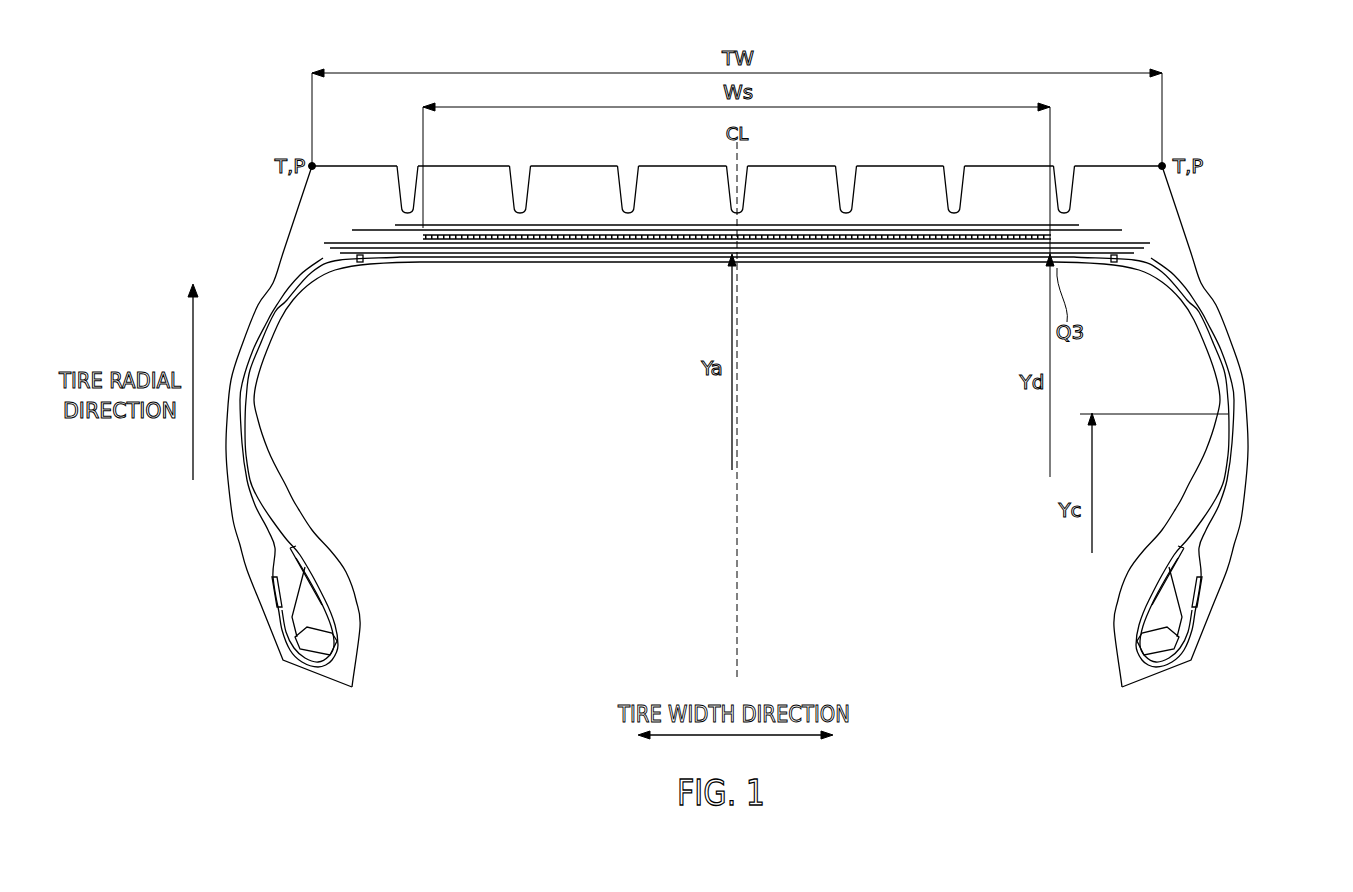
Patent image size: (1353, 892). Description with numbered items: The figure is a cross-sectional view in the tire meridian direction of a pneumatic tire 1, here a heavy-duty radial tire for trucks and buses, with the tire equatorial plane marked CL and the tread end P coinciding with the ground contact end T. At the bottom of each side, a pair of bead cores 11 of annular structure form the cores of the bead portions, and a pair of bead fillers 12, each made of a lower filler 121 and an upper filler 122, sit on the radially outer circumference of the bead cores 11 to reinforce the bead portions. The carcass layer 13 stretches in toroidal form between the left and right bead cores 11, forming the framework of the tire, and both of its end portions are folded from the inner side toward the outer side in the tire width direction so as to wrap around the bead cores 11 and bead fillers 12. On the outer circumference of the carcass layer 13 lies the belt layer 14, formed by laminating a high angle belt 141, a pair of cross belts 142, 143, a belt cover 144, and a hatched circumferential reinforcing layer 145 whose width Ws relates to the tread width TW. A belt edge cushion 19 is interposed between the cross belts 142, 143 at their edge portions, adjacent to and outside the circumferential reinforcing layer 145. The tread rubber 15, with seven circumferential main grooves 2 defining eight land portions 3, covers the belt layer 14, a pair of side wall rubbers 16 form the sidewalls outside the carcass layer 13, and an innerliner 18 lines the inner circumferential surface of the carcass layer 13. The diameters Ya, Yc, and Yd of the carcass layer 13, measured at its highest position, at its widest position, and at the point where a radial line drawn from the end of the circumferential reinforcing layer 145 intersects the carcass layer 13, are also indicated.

The pneumatic tire 1 is at (779, 396).
The circumferential main groove 2 is at (748, 165).
The land portion 3 is at (1101, 165).
The bead core 11 is at (320, 640).
The bead filler 12 is at (811, 591).
The lower filler 121 is at (313, 610).
The upper filler 122 is at (300, 573).
The carcass layer 13 is at (290, 520).
The belt layer 14 is at (737, 294).
The high angle belt 141 is at (782, 318).
The cross belt 142 is at (958, 249).
The cross belt 143 is at (907, 232).
The belt cover 144 is at (857, 240).
The circumferential reinforcing layer 145 is at (805, 242).
The tread rubber 15 is at (737, 159).
The side wall rubber 16 is at (290, 278).
The innerliner 18 is at (1143, 287).
The belt edge cushion 19 is at (353, 266).